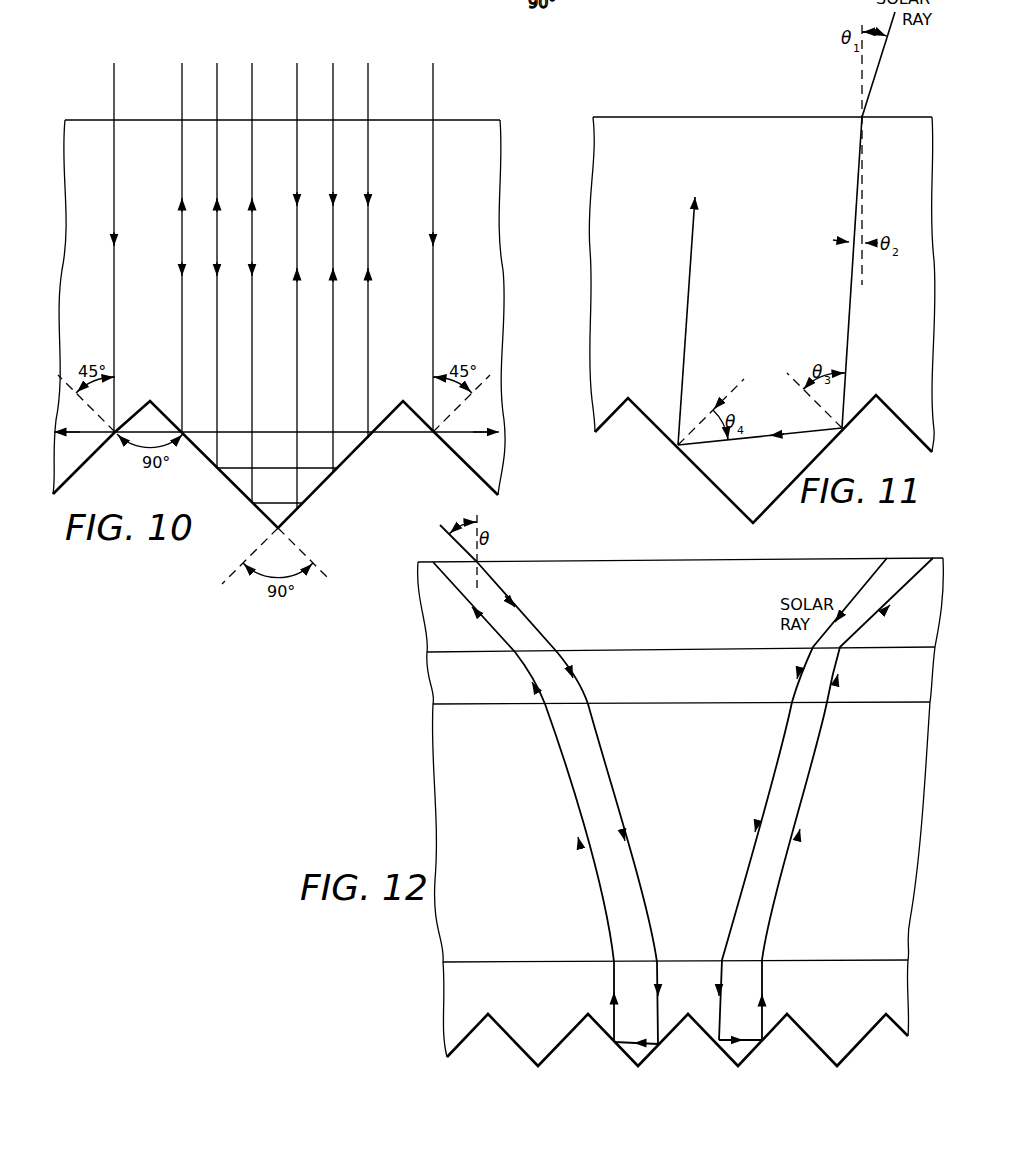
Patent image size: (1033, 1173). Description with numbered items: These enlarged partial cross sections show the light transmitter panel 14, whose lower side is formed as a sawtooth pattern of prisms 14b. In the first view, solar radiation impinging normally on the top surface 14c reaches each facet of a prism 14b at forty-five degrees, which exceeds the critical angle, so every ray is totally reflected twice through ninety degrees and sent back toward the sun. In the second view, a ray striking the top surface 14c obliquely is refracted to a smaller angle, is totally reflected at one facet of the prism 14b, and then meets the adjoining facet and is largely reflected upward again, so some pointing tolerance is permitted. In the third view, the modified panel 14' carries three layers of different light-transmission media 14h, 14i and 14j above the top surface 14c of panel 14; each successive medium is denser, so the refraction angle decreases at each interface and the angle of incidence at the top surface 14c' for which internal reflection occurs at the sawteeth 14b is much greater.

In FIG. 10, the light transmitter panel 14 is at (279, 307).
In FIG. 11, the light transmitter panel 14 is at (762, 284).
In FIG. 12, the light transmitter panel 14 is at (647, 1008).
In FIG. 10, the prism 14b is at (323, 483).
In FIG. 11, the prism 14b is at (715, 485).
In FIG. 12, the prism 14b is at (518, 1048).
In FIG. 10, the top surface 14c is at (282, 99).
In FIG. 11, the top surface 14c is at (762, 97).
In FIG. 12, the top surface 14c is at (644, 971).
In FIG. 12, the top surface of the entire panel 14c' is at (680, 545).
In FIG. 12, the light-transmission medium 14h is at (437, 624).
In FIG. 12, the light-transmission medium 14i is at (438, 679).
In FIG. 12, the light-transmission medium 14j is at (433, 810).
In FIG. 12, the light transmitter panel 14' is at (608, 760).